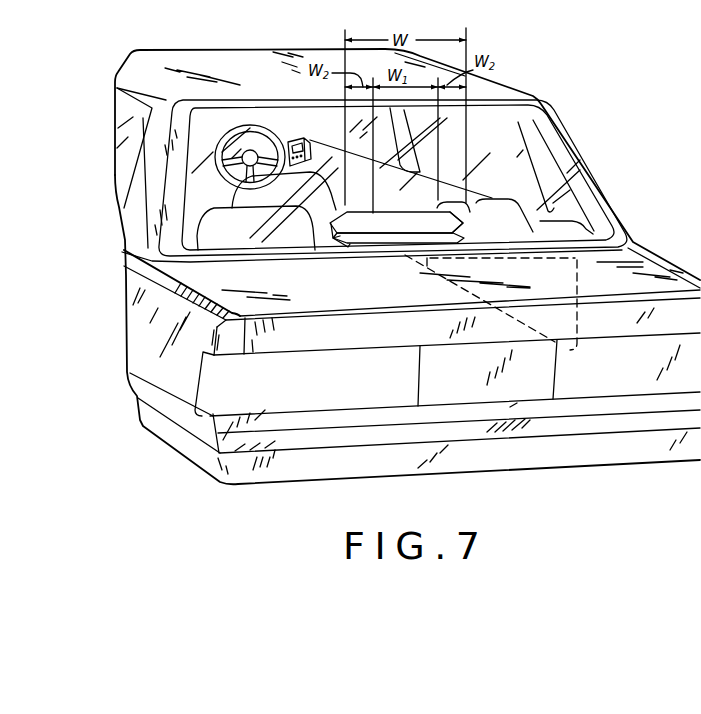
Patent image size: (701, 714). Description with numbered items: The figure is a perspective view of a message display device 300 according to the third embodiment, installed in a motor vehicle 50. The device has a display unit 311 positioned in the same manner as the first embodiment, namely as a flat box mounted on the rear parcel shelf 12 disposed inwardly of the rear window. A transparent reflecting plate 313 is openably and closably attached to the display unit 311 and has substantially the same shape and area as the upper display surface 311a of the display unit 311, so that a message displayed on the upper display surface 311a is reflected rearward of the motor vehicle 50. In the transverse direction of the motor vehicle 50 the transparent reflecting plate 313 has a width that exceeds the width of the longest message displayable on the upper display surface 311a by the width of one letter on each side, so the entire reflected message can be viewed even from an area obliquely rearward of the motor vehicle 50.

The motor vehicle 50 is at (642, 203).
The rear parcel shelf 12 is at (345, 234).
The message display device 300 is at (415, 198).
The display unit 311 is at (458, 227).
The upper display surface 311a is at (354, 240).
The transparent reflecting plate 313 is at (320, 243).